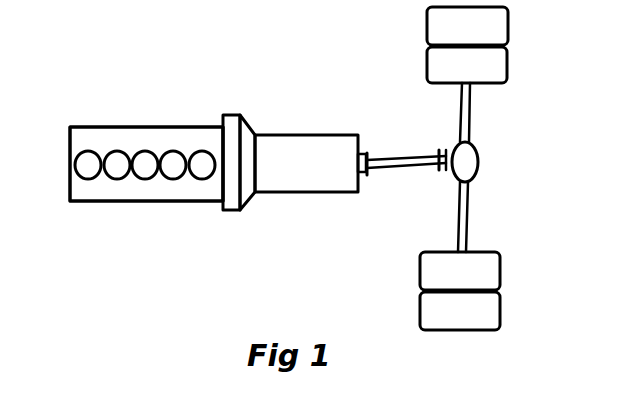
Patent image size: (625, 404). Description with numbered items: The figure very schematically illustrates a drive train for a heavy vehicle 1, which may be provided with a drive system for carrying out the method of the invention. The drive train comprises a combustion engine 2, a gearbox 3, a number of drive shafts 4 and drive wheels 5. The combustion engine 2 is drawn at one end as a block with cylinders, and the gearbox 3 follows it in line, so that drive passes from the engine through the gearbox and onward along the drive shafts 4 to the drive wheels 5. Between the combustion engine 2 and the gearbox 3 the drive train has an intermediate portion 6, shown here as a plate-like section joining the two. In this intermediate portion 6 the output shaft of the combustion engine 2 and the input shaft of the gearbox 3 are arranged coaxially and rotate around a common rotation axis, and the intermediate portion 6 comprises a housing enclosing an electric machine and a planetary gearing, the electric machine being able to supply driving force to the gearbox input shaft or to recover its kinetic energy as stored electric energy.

The heavy vehicle 1 is at (181, 84).
The combustion engine 2 is at (131, 192).
The gearbox 3 is at (320, 170).
The drive shafts 4 is at (403, 158).
The drive wheels 5 is at (492, 62).
The intermediate portion 6 is at (233, 156).